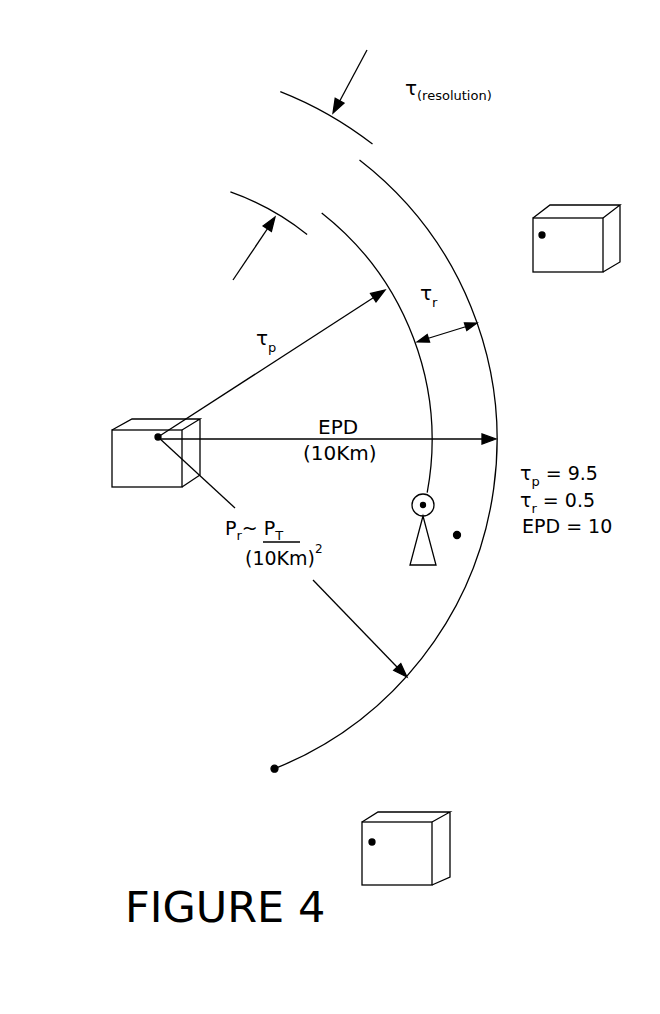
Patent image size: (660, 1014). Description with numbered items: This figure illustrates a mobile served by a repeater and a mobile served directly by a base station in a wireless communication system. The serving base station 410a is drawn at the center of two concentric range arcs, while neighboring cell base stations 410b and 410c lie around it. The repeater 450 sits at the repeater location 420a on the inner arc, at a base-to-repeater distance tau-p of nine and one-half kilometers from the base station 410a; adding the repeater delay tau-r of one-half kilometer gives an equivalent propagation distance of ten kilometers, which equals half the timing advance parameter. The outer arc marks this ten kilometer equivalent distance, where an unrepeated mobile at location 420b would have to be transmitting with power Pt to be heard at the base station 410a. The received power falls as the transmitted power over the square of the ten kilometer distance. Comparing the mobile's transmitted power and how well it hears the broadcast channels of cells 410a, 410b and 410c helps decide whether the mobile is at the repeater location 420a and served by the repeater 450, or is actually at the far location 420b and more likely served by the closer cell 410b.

The base station 410a is at (156, 453).
The base station 410b is at (406, 848).
The base station 410c is at (576, 238).
The repeater location 420a is at (457, 535).
The unrepeated mobile location 420b is at (307, 787).
The repeater 450 is at (402, 529).